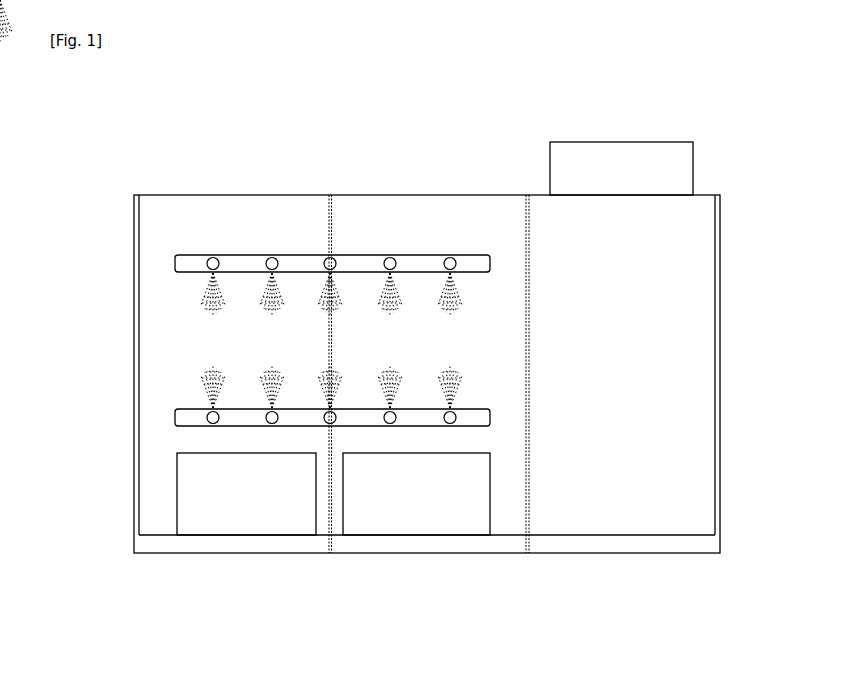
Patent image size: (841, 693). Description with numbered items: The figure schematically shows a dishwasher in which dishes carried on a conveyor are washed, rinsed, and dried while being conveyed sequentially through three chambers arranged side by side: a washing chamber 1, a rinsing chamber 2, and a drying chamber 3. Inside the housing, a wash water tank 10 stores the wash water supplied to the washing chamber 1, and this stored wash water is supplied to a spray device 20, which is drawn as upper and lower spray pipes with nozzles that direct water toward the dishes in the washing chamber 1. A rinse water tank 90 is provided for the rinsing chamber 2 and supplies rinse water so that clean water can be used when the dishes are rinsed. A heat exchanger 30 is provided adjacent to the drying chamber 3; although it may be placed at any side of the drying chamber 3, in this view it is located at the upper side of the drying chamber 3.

The washing chamber 1 is at (238, 561).
The rinsing chamber 2 is at (421, 561).
The drying chamber 3 is at (619, 561).
The wash water tank 10 is at (177, 488).
The spray device 20 is at (178, 414).
The heat exchanger 30 is at (639, 157).
The rinse water tank 90 is at (490, 482).